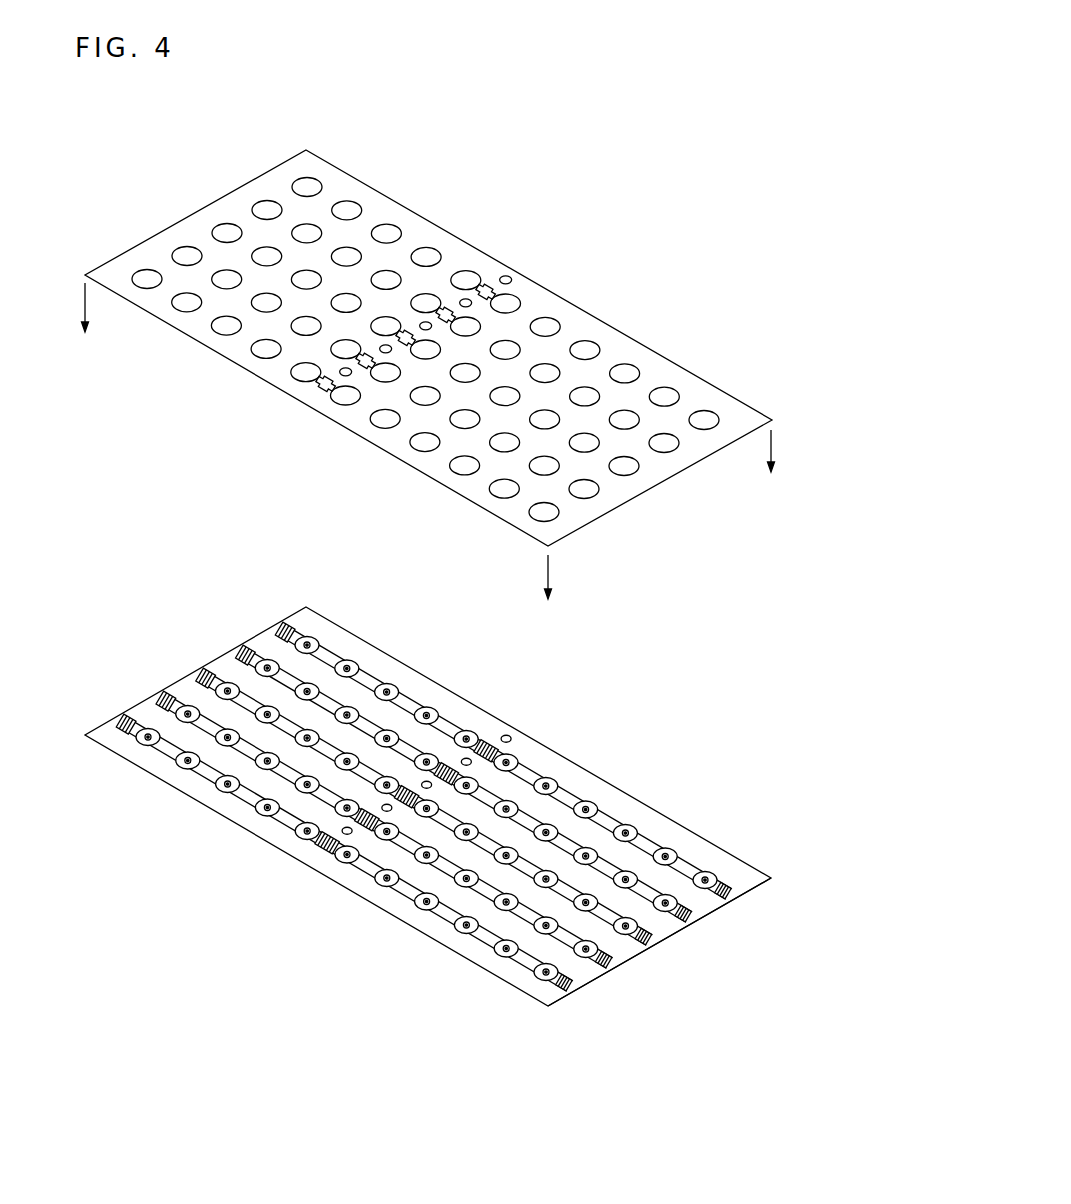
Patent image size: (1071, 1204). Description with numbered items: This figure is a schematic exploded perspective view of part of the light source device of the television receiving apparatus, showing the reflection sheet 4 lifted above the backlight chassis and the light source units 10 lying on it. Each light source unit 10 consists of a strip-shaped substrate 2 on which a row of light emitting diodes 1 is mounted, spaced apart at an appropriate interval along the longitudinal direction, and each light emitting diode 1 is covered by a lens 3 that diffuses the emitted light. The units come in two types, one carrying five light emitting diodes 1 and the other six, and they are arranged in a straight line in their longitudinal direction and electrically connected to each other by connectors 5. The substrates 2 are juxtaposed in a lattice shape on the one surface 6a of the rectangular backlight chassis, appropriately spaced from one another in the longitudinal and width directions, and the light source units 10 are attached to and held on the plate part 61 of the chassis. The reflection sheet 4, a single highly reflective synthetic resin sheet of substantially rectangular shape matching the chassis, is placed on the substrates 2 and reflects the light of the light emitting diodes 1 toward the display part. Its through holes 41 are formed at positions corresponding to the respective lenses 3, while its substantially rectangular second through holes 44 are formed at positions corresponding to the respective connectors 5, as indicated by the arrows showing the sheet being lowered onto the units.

The light emitting diode 1 is at (678, 848).
The substrate 2 is at (722, 891).
The lens 3 is at (668, 847).
The reflection sheet 4 is at (632, 508).
The connector 5 is at (338, 842).
The one surface of the backlight chassis 6a is at (352, 881).
The light source unit 10 is at (535, 760).
The through hole 41 is at (187, 312).
The second through hole 44 is at (445, 311).
The plate part 61 is at (588, 978).